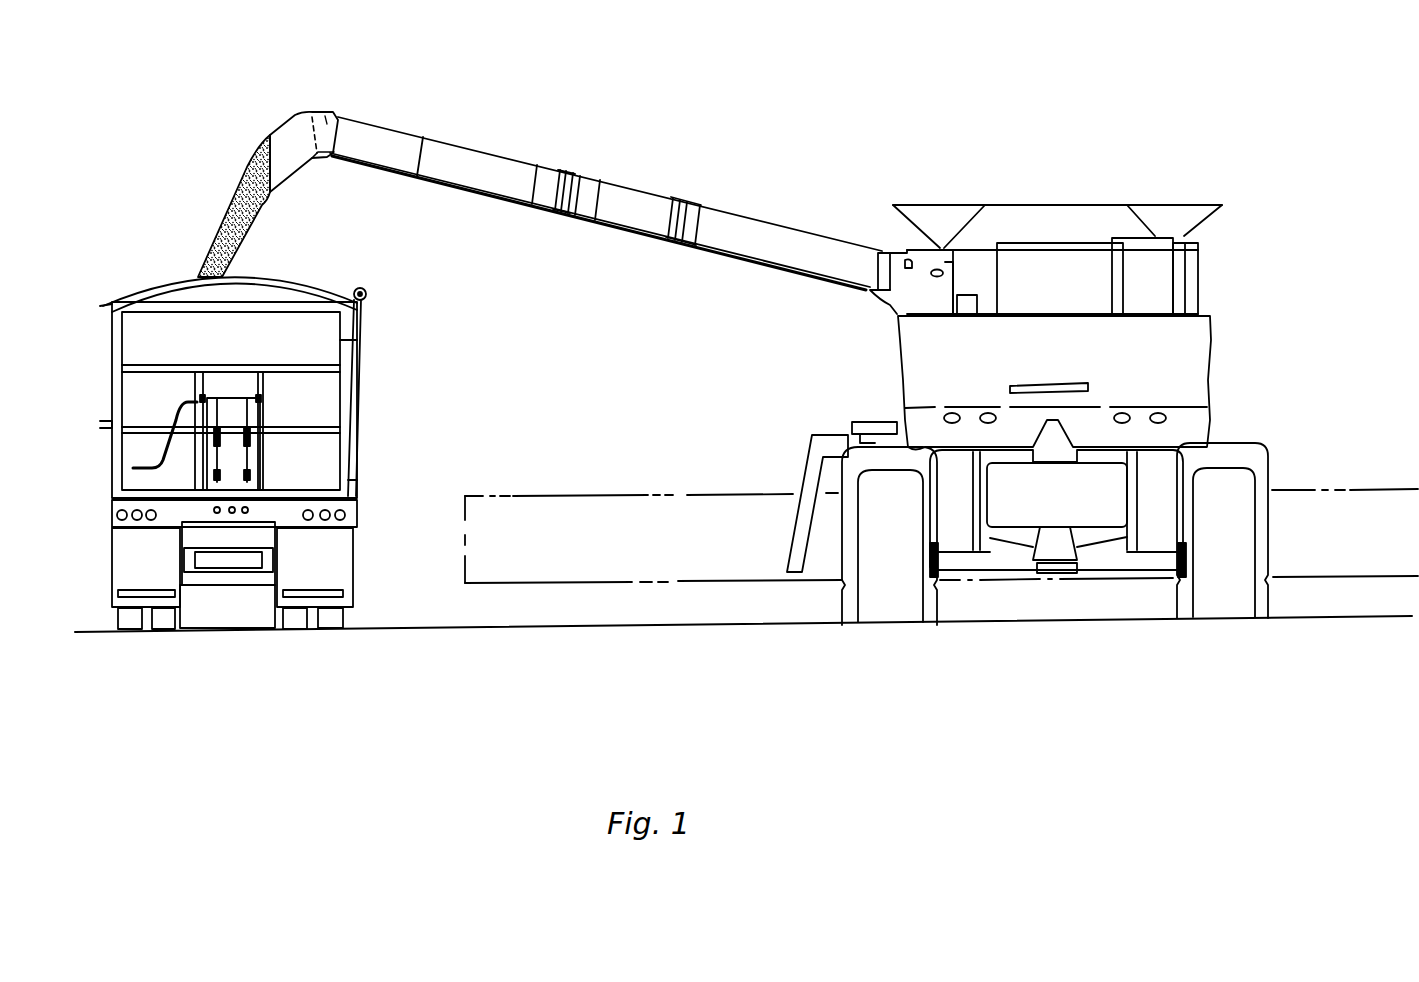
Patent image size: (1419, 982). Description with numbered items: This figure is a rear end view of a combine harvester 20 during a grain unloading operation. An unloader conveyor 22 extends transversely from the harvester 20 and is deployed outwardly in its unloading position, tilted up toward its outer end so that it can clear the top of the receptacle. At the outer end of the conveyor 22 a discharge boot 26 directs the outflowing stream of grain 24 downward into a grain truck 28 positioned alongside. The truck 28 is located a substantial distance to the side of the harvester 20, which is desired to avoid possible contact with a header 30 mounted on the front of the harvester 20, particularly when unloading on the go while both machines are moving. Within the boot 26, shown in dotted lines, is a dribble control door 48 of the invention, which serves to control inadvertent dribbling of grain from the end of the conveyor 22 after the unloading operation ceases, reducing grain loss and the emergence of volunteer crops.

The combine harvester 20 is at (1250, 158).
The unloader conveyor 22 is at (648, 194).
The grain 24 is at (220, 217).
The discharge boot 26 is at (295, 113).
The grain truck 28 is at (302, 287).
The header 30 is at (615, 494).
The dribble control door 48 is at (293, 130).